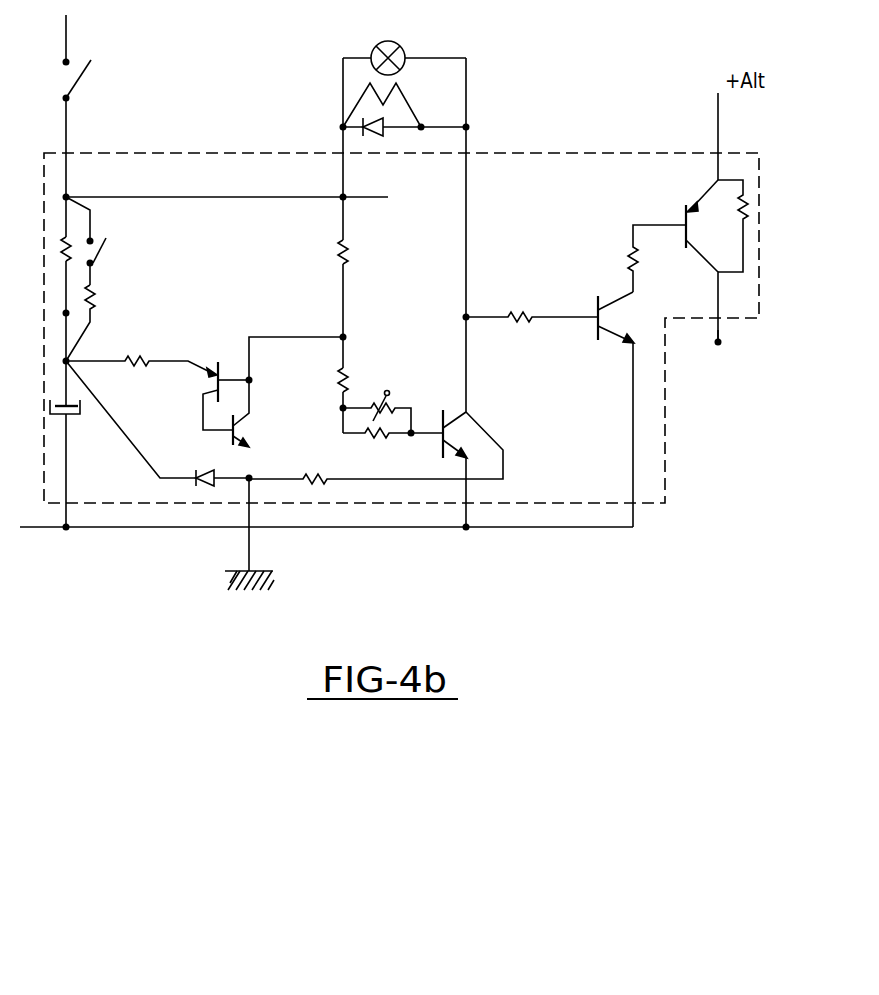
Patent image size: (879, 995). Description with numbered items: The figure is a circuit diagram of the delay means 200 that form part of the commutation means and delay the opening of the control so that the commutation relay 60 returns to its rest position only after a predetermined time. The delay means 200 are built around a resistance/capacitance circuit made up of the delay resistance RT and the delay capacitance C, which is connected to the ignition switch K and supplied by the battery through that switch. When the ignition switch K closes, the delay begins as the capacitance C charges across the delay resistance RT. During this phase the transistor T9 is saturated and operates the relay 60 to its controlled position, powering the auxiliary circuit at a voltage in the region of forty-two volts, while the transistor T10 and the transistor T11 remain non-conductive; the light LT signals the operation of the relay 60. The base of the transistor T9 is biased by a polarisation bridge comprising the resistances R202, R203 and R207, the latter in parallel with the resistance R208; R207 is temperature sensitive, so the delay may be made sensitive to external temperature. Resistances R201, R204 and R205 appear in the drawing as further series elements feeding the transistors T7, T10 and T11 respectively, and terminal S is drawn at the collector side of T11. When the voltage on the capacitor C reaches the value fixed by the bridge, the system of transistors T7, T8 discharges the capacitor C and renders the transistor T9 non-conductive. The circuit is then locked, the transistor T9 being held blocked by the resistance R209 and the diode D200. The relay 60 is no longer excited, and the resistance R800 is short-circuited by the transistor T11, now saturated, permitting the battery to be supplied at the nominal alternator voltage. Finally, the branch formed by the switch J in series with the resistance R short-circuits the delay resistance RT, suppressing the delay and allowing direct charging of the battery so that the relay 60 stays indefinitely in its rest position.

The delay means 200 is at (501, 64).
The ignition switch K is at (66, 81).
The delay resistance RT is at (48, 251).
The switch J is at (97, 250).
The resistance R is at (97, 297).
The resistor R201 is at (141, 377).
The delay capacitance C is at (72, 417).
The transistor T7 is at (225, 355).
The transistor T8 is at (238, 431).
The diode D200 is at (201, 473).
The resistance circuit R209 is at (376, 448).
The light LT is at (404, 46).
The commutation relay 60 is at (358, 101).
The resistance R202 is at (311, 251).
The resistance R203 is at (370, 372).
The temperature sensitive resistance R207 is at (394, 409).
The resistance R208 is at (393, 449).
The transistor T9 is at (446, 427).
The resistor R204 is at (532, 336).
The transistor T10 is at (600, 338).
The resistor R205 is at (625, 258).
The transistor T11 is at (704, 217).
The resistance R800 is at (759, 226).
The terminal S is at (719, 344).